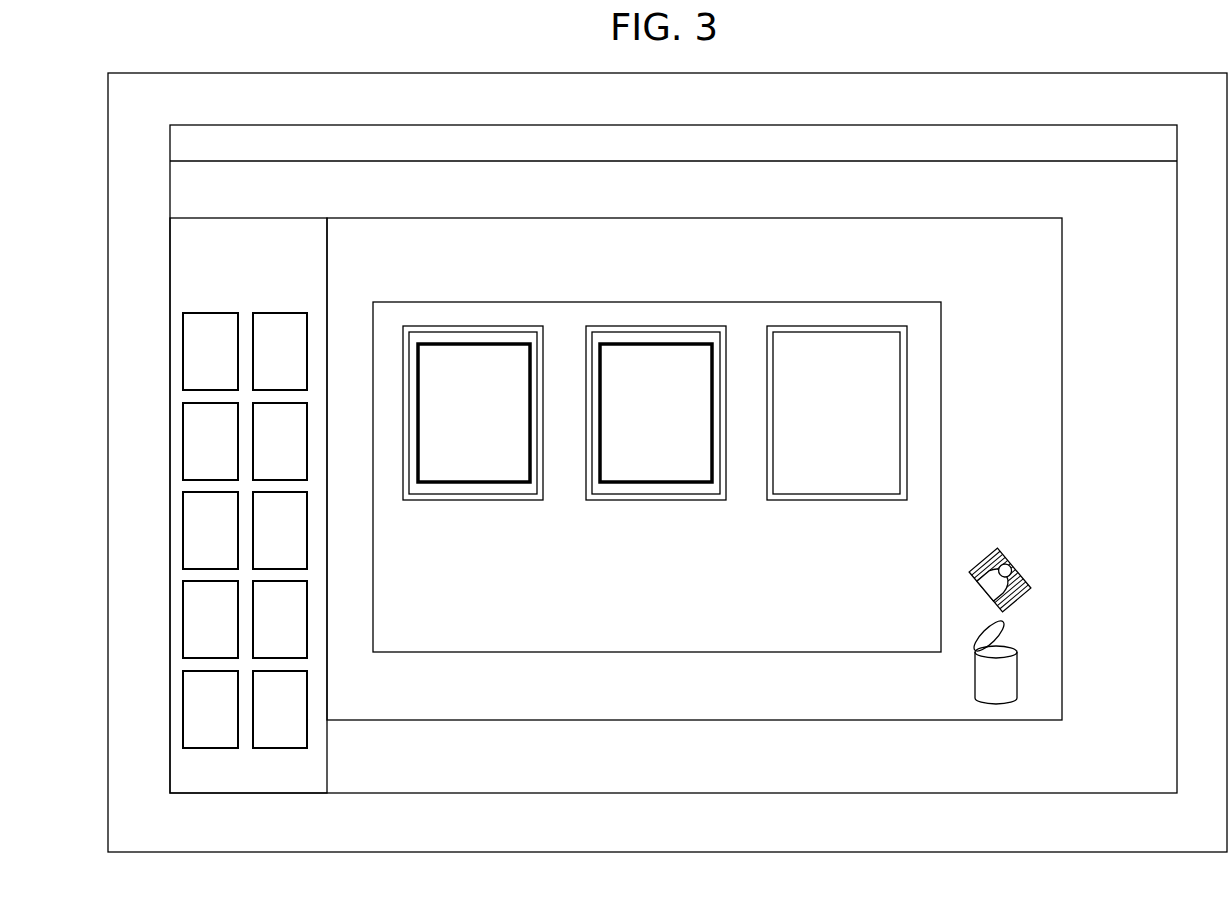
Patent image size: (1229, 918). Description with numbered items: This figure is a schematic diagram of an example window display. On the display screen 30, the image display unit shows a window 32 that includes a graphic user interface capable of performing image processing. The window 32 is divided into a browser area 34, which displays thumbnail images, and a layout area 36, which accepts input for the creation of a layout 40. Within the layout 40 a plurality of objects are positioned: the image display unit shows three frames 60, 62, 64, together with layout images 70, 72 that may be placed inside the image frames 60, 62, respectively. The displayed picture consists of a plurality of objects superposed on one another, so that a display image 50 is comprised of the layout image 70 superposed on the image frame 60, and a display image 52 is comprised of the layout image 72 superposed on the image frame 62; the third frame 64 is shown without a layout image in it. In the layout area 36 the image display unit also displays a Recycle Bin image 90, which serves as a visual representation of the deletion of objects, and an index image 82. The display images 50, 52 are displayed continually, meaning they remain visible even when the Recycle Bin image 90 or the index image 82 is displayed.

The display screen 30 is at (172, 74).
The window 32 is at (228, 126).
The browser area 34 is at (228, 218).
The layout area 36 is at (397, 218).
The layout 40 is at (373, 328).
The display image 50 is at (473, 362).
The image frame 60 is at (470, 338).
The layout image 70 is at (500, 352).
The display image 52 is at (656, 362).
The image frame 62 is at (651, 338).
The layout image 72 is at (681, 352).
The frame 64 is at (832, 338).
The index image 82 is at (1012, 554).
The Recycle Bin image 90 is at (1019, 662).